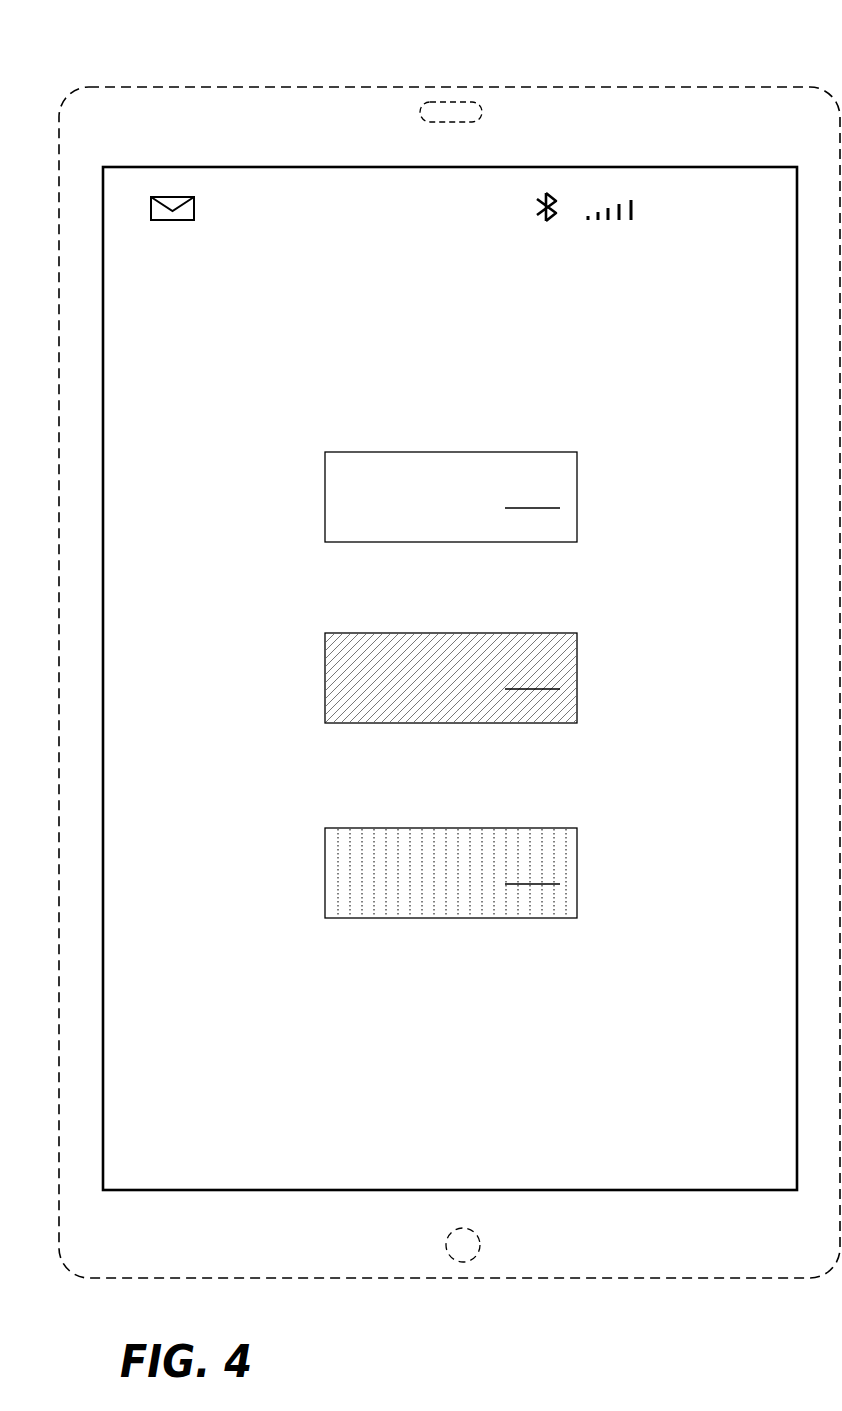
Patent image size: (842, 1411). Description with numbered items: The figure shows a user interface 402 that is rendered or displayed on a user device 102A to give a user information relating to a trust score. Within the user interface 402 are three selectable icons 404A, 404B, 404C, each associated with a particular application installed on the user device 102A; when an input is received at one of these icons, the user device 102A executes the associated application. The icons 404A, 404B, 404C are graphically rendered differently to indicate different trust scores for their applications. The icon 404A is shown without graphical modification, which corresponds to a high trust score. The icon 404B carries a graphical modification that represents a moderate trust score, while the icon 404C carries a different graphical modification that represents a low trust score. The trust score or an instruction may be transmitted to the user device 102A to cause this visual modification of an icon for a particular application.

The user device 102A is at (656, 66).
The user interface 402 is at (295, 256).
The icon 404A is at (577, 501).
The icon 404B is at (577, 682).
The icon 404C is at (577, 877).